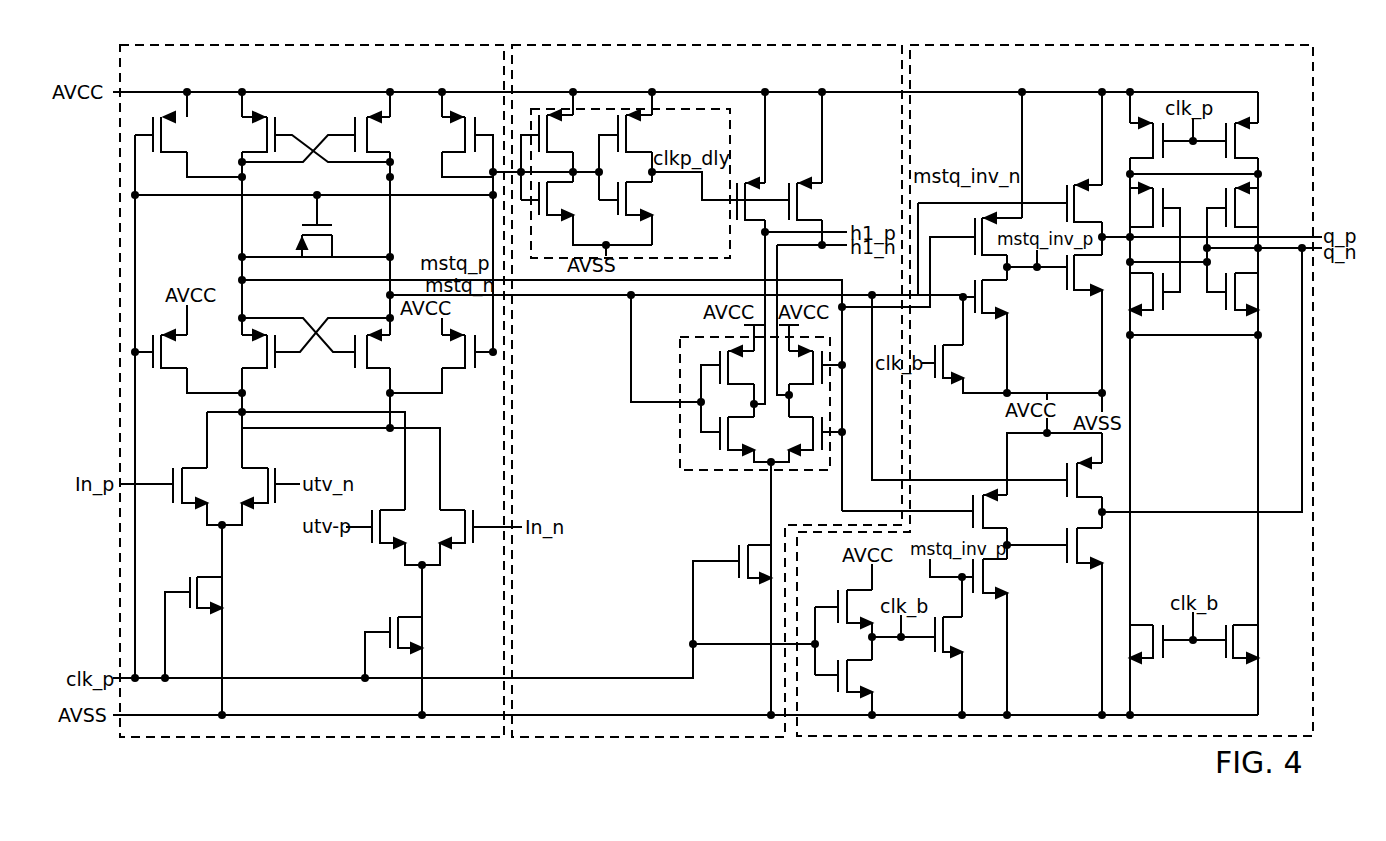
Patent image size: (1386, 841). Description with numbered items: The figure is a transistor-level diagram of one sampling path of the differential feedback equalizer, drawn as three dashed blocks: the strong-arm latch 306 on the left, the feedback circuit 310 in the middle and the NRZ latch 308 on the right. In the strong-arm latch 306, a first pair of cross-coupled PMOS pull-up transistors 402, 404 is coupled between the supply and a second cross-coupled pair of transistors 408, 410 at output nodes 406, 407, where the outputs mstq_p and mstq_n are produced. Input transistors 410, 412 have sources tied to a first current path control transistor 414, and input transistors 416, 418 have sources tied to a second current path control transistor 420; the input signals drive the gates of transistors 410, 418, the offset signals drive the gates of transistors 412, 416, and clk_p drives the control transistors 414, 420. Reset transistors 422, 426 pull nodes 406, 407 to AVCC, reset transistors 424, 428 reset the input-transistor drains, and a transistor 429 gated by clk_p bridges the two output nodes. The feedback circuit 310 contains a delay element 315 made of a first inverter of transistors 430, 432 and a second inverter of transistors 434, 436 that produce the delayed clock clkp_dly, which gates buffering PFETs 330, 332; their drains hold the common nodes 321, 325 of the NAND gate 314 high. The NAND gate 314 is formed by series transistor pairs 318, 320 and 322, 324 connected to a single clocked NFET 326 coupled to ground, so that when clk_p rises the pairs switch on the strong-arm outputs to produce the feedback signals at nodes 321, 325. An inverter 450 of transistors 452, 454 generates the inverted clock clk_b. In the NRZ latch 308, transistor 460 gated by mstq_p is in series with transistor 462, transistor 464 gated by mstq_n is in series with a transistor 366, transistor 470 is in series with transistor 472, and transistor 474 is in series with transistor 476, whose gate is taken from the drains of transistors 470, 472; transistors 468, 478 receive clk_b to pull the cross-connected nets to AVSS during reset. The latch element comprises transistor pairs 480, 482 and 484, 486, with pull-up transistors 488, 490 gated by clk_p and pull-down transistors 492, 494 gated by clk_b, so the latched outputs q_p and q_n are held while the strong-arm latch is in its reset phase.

The strong-arm latch 306 is at (437, 27).
The odd feedback circuit 310 is at (737, 27).
The NRZ latch 308 is at (1160, 27).
The cross-coupled transistor 402 is at (258, 115).
The cross-coupled transistor 404 is at (382, 115).
The output node 406 is at (240, 257).
The output node 407 is at (393, 257).
The cross-coupled transistor 408 is at (262, 340).
The transistor 410 is at (370, 338).
The input transistor 412 is at (270, 468).
The first current path control transistor 414 is at (196, 577).
The input transistor 416 is at (380, 510).
The input transistor 418 is at (462, 511).
The second current path control transistor 420 is at (398, 617).
The reset transistor 422 is at (182, 115).
The reset transistor 424 is at (170, 335).
The reset transistor 426 is at (458, 115).
The reset transistor 428 is at (460, 336).
The transistor 429 is at (299, 248).
The transistor 430 is at (562, 114).
The transistor 432 is at (568, 216).
The transistor 434 is at (642, 116).
The transistor 436 is at (640, 215).
The delay element 315 is at (695, 109).
The buffering transistor 330 is at (738, 208).
The buffering transistor 332 is at (808, 183).
The common node 321 is at (763, 236).
The common node 325 is at (820, 246).
The NAND gate 314 is at (680, 440).
The transistor 318 is at (716, 350).
The transistor 320 is at (720, 428).
The transistor 322 is at (820, 356).
The transistor 324 is at (797, 458).
The transistor 326 is at (752, 580).
The inverter 450 is at (843, 670).
The transistor 452 is at (862, 590).
The transistor 454 is at (858, 660).
The transistor 460 is at (978, 245).
The transistor 462 is at (978, 290).
The transistor 464 is at (1094, 186).
The NMOS transistor 366 is at (1070, 270).
The transistor 468 is at (950, 378).
The transistor 470 is at (968, 511).
The transistor 472 is at (990, 565).
The transistor 474 is at (1090, 464).
The transistor 476 is at (1098, 565).
The transistor 478 is at (950, 652).
The transistor 480 is at (1152, 195).
The transistor 482 is at (1140, 310).
The transistor 484 is at (1232, 195).
The transistor 486 is at (1248, 310).
The pull-up transistor 488 is at (1140, 122).
The pull-up transistor 490 is at (1248, 122).
The pull-down transistor 492 is at (1142, 658).
The pull-down transistor 494 is at (1248, 658).